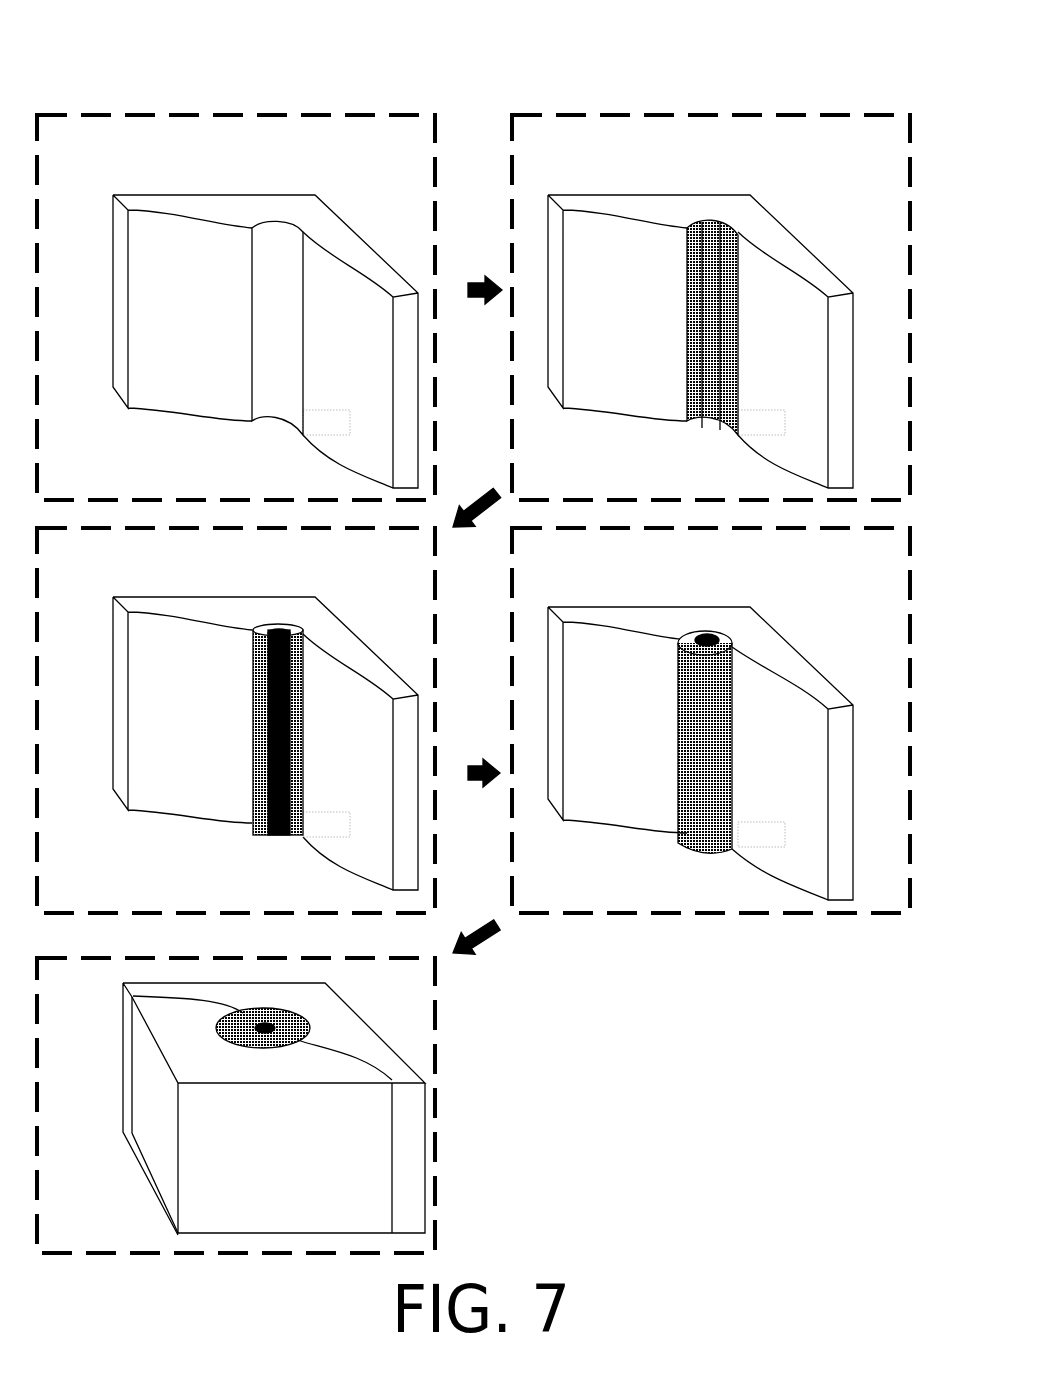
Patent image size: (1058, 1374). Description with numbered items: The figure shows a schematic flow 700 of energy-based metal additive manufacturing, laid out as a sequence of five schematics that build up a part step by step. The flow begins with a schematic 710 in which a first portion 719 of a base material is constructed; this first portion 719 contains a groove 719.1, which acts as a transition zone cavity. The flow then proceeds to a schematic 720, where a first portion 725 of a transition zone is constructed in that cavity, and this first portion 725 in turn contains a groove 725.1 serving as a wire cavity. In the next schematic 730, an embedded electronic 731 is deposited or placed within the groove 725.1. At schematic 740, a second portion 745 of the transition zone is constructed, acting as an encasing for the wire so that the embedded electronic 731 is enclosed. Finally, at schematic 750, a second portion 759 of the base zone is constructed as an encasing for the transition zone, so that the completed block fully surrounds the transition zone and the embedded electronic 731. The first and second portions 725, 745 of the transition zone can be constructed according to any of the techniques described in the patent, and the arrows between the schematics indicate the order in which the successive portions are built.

The schematic flow 700 is at (696, 96).
The schematic 710 is at (327, 494).
The schematic 720 is at (777, 494).
The schematic 730 is at (350, 898).
The schematic 740 is at (782, 906).
The schematic 750 is at (128, 1226).
The first portion of base material 719 is at (215, 191).
The groove 719.1 is at (280, 377).
The first portion of transition zone 725 is at (683, 398).
The groove 725.1 is at (712, 393).
The embedded electronic 731 is at (265, 838).
The second portion of transition zone 745 is at (690, 848).
The second portion of base zone 759 is at (143, 1170).